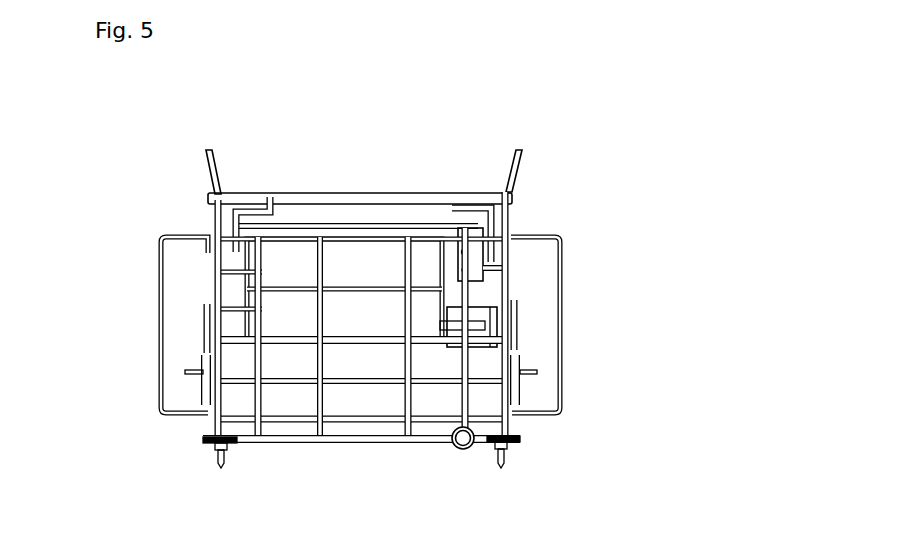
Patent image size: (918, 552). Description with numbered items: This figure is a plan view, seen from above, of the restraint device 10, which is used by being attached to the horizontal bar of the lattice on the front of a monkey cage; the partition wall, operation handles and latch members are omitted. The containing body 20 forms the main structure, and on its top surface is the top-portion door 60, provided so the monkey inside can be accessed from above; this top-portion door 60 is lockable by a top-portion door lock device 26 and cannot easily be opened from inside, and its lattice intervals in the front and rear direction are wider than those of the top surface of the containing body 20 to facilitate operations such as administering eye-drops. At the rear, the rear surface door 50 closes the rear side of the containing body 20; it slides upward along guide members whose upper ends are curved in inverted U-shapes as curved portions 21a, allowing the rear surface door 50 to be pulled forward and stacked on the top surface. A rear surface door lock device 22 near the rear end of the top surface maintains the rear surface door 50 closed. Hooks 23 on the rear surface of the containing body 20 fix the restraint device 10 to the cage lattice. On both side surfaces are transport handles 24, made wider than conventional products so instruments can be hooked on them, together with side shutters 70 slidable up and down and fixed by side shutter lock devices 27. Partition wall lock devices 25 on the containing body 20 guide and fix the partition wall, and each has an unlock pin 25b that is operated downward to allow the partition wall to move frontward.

The restraint device 10 is at (594, 144).
The containing body 20 is at (365, 442).
The curved portions 21a is at (212, 237).
The rear surface door lock device 22 is at (475, 263).
The hooks 23 is at (207, 152).
The transport handles 24 is at (160, 362).
The partition wall lock device 25 is at (208, 442).
The unlock pin 25b is at (223, 460).
The top-portion door lock device 26 is at (472, 342).
The side shutter lock devices 27 is at (193, 387).
The rear surface door 50 is at (425, 210).
The top-portion door 60 is at (323, 277).
The side shutters 70 is at (203, 327).